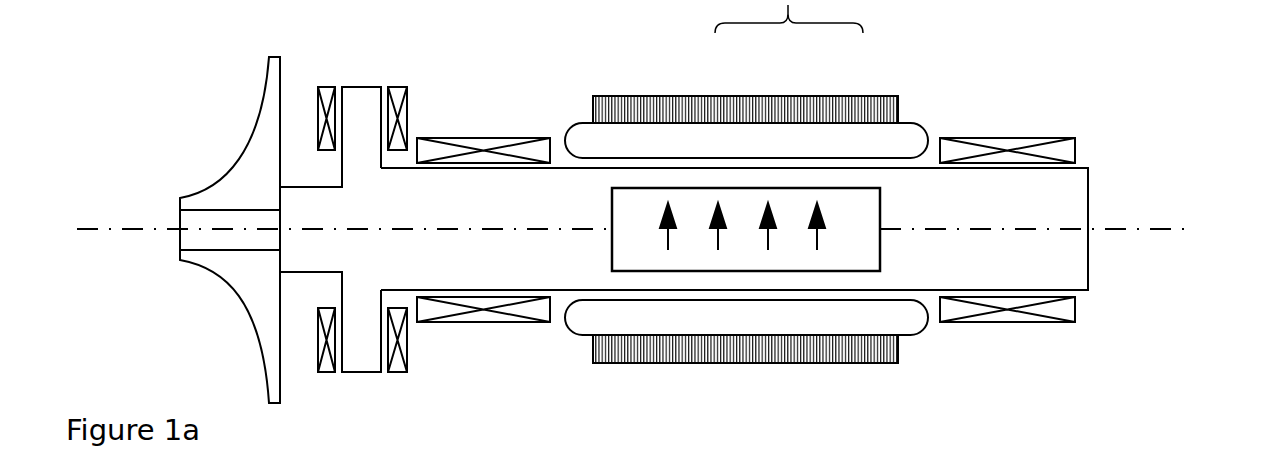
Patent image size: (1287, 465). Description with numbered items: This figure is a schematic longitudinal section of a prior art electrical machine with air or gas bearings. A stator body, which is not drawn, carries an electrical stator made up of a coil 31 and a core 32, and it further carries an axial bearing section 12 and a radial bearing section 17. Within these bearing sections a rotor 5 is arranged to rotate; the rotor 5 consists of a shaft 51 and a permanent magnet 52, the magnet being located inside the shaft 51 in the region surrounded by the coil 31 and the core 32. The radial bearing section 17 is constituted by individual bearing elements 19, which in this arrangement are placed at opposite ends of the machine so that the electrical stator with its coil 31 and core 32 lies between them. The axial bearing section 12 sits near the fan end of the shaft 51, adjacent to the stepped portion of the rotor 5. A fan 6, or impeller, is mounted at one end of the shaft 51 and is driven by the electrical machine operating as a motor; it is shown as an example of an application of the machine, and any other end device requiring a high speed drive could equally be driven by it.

The rotor 5 is at (318, 172).
The fan 6 is at (258, 283).
The axial bearing section 12 is at (402, 406).
The radial bearing section 17 is at (968, 343).
The bearing elements 19 is at (483, 140).
The coil 31 is at (737, 142).
The core 32 is at (662, 107).
The shaft 51 is at (1050, 222).
The permanent magnet 52 is at (852, 249).